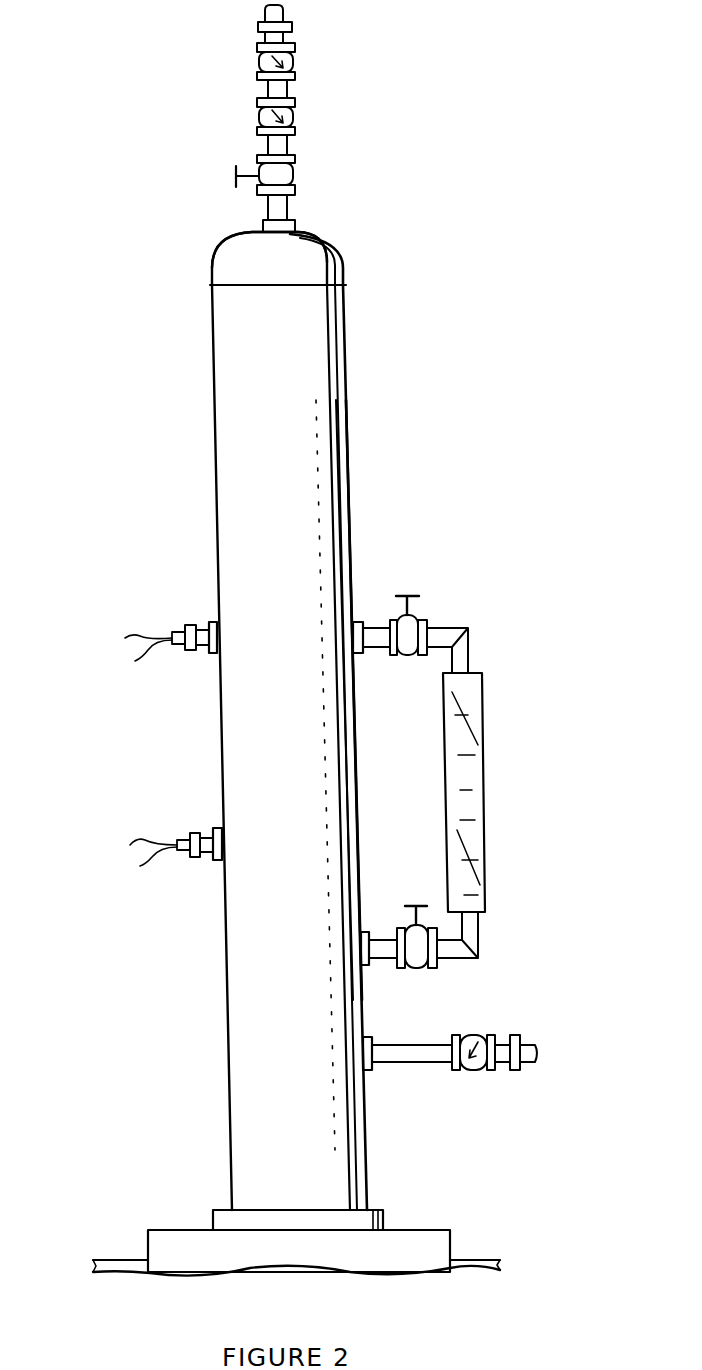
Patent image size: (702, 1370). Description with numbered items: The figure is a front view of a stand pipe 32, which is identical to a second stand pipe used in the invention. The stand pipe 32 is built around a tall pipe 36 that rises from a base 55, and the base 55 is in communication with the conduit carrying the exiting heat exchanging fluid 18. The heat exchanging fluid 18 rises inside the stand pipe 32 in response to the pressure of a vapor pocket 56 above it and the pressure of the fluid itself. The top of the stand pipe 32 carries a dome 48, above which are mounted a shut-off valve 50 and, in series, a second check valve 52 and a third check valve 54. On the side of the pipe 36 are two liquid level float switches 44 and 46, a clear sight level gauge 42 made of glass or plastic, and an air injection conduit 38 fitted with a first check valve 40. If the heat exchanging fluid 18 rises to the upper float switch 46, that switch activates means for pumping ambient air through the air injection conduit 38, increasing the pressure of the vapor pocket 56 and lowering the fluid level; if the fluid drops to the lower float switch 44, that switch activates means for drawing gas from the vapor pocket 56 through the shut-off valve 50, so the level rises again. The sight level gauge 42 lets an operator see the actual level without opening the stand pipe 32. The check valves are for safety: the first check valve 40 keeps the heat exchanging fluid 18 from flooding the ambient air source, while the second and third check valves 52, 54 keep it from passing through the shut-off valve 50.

The heat exchanging fluid 18 is at (322, 1165).
The stand pipe 32 is at (346, 428).
The pipe 36 is at (212, 393).
The air injection conduit 38 is at (372, 1067).
The first check valve 40 is at (472, 1035).
The sight level gauge 42 is at (486, 798).
The liquid level float switch 44 is at (207, 828).
The liquid level float switch 46 is at (200, 622).
The dome 48 is at (330, 242).
The shut-off valve 50 is at (297, 178).
The second check valve 52 is at (297, 117).
The third check valve 54 is at (296, 61).
The base 55 is at (176, 1230).
The vapor pocket 56 is at (315, 350).